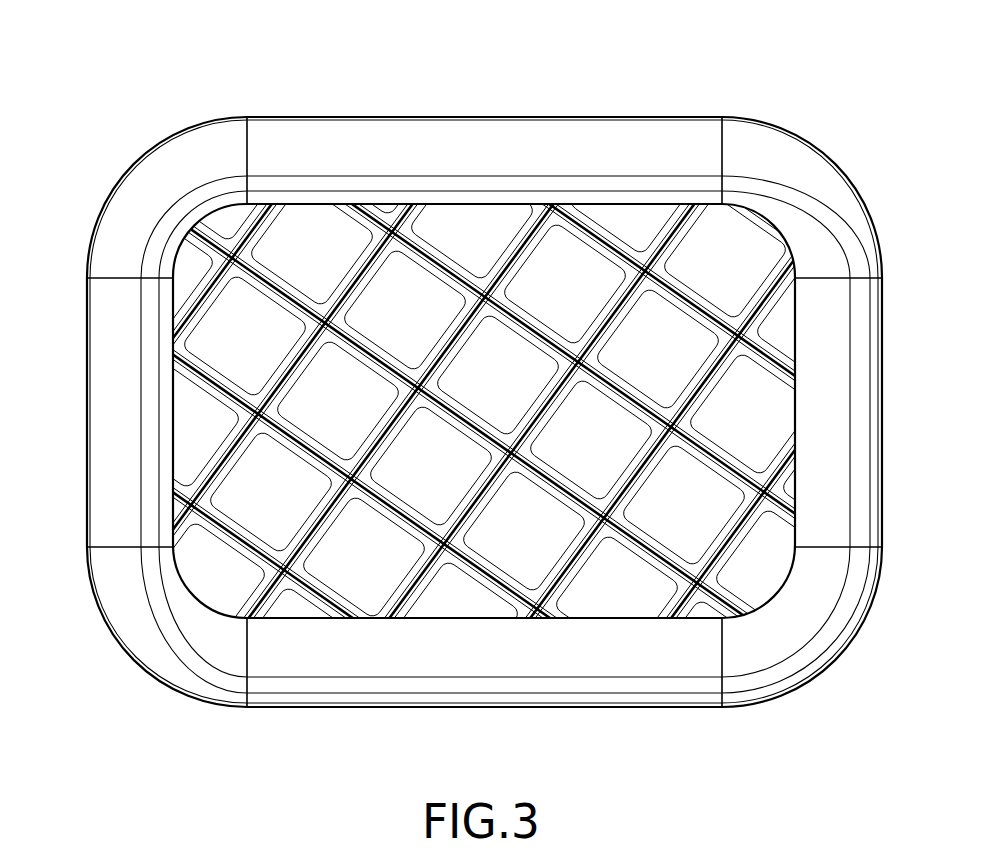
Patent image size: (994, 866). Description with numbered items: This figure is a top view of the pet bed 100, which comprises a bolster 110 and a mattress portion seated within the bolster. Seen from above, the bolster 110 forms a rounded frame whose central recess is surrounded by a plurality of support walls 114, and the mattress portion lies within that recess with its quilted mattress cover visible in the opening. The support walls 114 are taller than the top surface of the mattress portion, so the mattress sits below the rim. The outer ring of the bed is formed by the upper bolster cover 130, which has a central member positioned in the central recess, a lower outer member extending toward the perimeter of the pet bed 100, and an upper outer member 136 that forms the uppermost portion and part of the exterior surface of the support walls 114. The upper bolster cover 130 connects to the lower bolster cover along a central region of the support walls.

The pet bed 100 is at (173, 80).
The bolster 110 is at (168, 605).
The support walls 114 is at (88, 400).
The upper bolster cover 130 is at (770, 170).
The upper outer member 136 is at (833, 325).